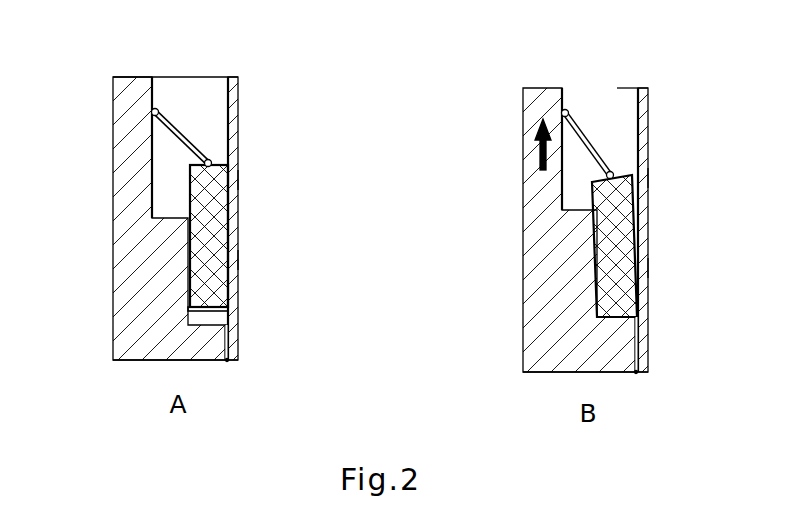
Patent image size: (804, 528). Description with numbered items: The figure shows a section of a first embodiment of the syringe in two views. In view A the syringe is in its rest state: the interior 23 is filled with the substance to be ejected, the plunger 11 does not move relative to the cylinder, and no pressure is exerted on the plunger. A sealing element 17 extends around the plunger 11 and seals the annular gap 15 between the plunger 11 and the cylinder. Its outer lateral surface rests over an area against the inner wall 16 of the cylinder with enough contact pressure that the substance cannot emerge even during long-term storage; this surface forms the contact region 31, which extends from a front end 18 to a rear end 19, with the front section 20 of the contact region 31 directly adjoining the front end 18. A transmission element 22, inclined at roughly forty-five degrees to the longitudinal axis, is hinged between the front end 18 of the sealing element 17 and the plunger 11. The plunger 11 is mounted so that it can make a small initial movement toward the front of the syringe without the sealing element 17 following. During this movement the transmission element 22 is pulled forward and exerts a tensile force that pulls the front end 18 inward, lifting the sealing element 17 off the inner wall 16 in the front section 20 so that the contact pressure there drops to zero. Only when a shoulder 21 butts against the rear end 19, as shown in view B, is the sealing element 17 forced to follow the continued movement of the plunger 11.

The plunger 11 is at (138, 285).
The annular gap 15 is at (227, 360).
The inner wall 16 is at (232, 122).
The sealing element 17 is at (216, 230).
The front end 18 is at (214, 162).
The rear end 19 is at (216, 310).
The front section 20 is at (244, 180).
The shoulder 21 is at (228, 327).
The transmission element 22 is at (176, 122).
The interior 23 is at (198, 92).
The contact region 31 is at (252, 260).